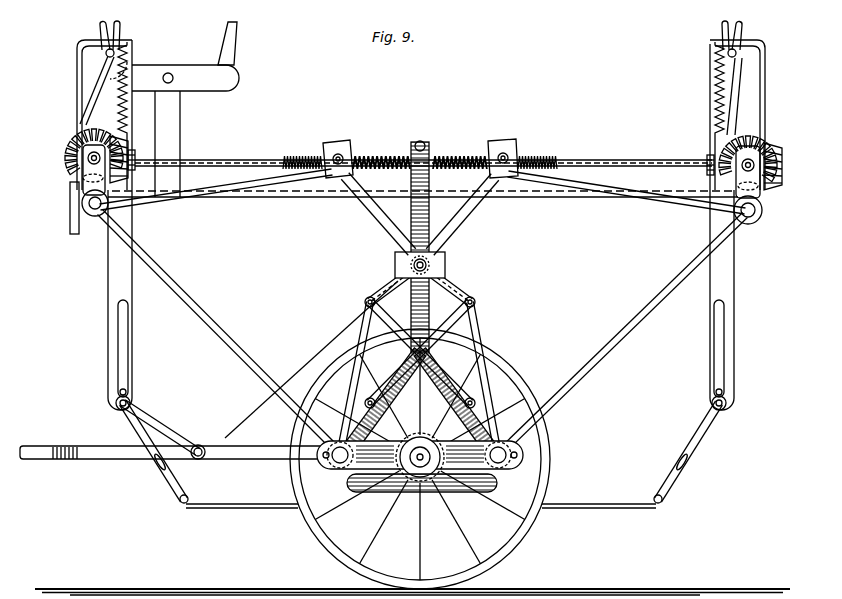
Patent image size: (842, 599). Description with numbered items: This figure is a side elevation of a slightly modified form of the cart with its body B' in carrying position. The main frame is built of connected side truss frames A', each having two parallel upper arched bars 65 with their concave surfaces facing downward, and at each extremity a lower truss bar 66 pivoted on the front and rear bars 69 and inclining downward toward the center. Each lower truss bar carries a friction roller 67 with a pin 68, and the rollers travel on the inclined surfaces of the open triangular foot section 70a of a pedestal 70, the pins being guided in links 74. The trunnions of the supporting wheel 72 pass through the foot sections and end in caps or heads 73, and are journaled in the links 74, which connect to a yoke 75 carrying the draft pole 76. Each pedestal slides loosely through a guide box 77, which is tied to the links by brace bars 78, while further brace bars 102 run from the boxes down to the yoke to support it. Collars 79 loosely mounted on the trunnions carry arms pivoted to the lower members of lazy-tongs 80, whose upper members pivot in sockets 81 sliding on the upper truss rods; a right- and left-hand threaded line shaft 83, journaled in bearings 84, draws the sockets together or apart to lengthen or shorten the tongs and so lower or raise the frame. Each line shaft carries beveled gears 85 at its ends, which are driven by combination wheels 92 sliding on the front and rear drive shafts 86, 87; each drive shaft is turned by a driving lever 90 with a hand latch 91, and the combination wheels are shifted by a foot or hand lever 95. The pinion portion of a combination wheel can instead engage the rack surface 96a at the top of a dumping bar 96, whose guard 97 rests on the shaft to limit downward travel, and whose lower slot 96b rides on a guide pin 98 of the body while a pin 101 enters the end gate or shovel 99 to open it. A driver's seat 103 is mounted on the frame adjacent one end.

The upper arched bar 65 is at (423, 191).
The lower truss bar 66 is at (232, 342).
The friction roller 67 is at (420, 444).
The pin 68 is at (335, 469).
The front and rear bar 69 is at (110, 206).
The pedestal 70 is at (430, 180).
The triangular foot section 70a is at (386, 496).
The supporting wheel 72 is at (447, 577).
The cap or head 73 is at (420, 457).
The link 74 is at (420, 455).
The yoke 75 is at (172, 453).
The draft pole 76 is at (64, 438).
The box 77 is at (395, 262).
The brace bar 78 is at (356, 398).
The collar 79 is at (420, 400).
The lazy-tongs 80 is at (462, 300).
The socket 81 is at (341, 145).
The line shaft 83 is at (423, 156).
The bearing 84 is at (99, 217).
The beveled gear 85 is at (134, 151).
The front drive shaft 86 is at (72, 168).
The rear drive shaft 87 is at (770, 165).
The driving lever 90 is at (131, 40).
The hand latch 91 is at (727, 45).
The combination wheel 92 is at (68, 147).
The foot or hand lever 95 is at (70, 225).
The dumping bar 96 is at (133, 232).
The rack surface 96a is at (716, 90).
The longitudinal slot 96b is at (129, 355).
The guard 97 is at (77, 122).
The guide pin 98 is at (127, 393).
The end gate or shovel 99 is at (182, 496).
The pin 101 is at (120, 411).
The brace bar 102 is at (282, 339).
The driver's seat 103 is at (185, 109).
The side truss frame A' is at (615, 360).
The frame B' is at (423, 349).